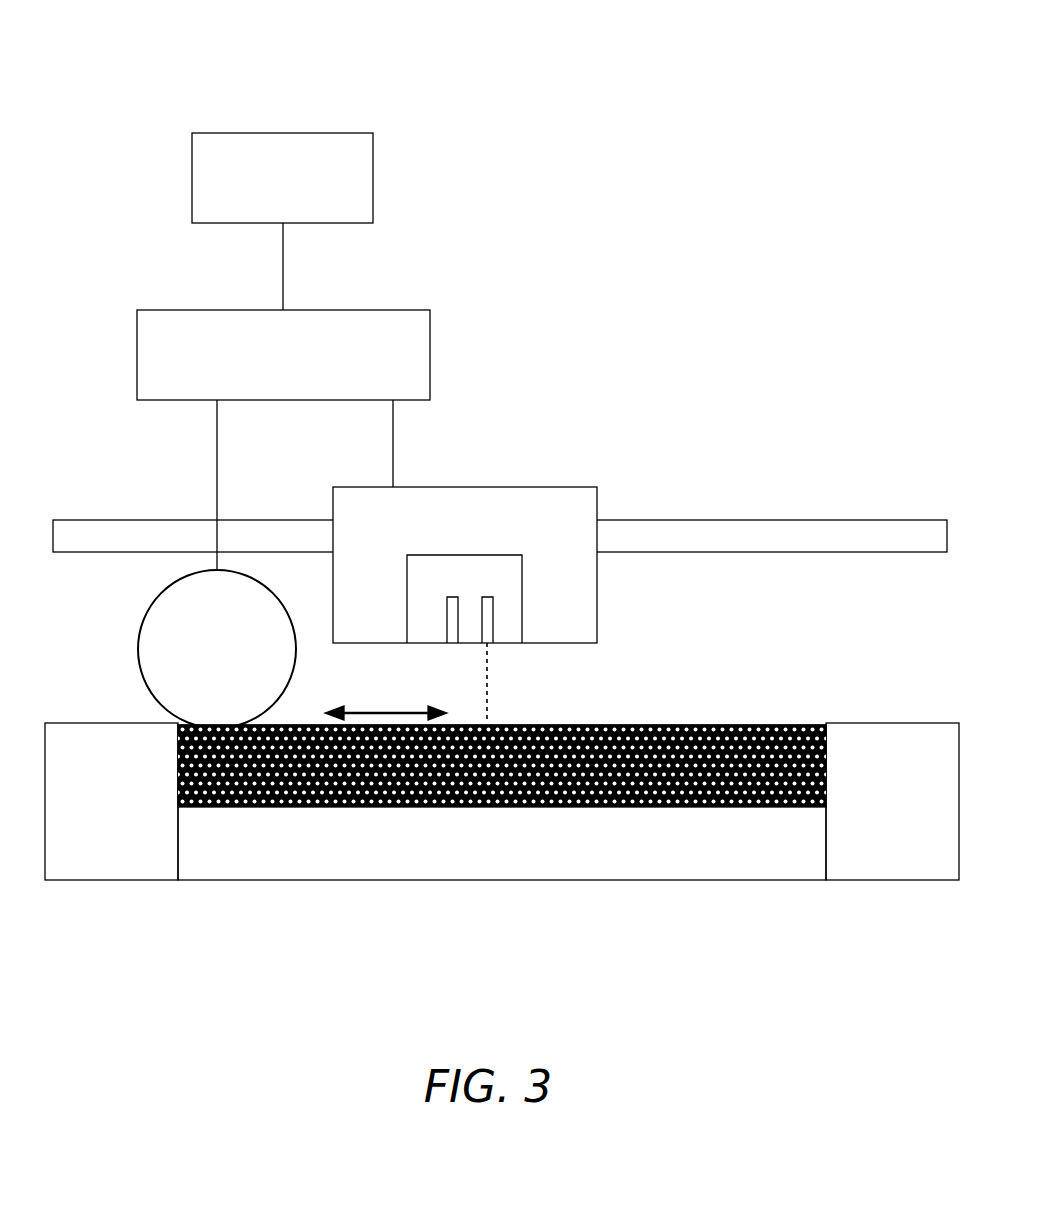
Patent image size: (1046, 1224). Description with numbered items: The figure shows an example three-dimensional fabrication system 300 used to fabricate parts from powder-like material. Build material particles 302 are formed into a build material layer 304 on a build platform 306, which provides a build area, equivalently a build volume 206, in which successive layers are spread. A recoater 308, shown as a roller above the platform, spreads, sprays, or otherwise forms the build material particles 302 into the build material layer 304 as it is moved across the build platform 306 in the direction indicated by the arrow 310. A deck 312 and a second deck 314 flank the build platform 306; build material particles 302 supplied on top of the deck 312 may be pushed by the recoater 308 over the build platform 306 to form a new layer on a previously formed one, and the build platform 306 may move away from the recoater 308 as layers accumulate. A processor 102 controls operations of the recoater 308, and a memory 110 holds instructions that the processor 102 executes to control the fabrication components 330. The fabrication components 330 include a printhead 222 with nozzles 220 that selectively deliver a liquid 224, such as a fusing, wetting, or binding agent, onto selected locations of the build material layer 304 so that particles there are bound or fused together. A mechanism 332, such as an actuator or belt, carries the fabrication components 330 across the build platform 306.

The 3D fabrication system 300 is at (536, 112).
The memory 110 is at (262, 203).
The processor 102 is at (263, 381).
The mechanism 332 is at (122, 520).
The fabrication components 330 is at (548, 487).
The printhead 222 is at (457, 554).
The nozzles 220 is at (493, 603).
The liquid 224 is at (489, 691).
The arrow 310 is at (387, 711).
The recoater 308 is at (139, 632).
The deck 312 is at (92, 828).
The deck 314 is at (874, 828).
The build platform 306 is at (482, 869).
The build material layer 304 is at (654, 810).
The build material particles 302 is at (318, 807).
The build volume 206 is at (805, 712).